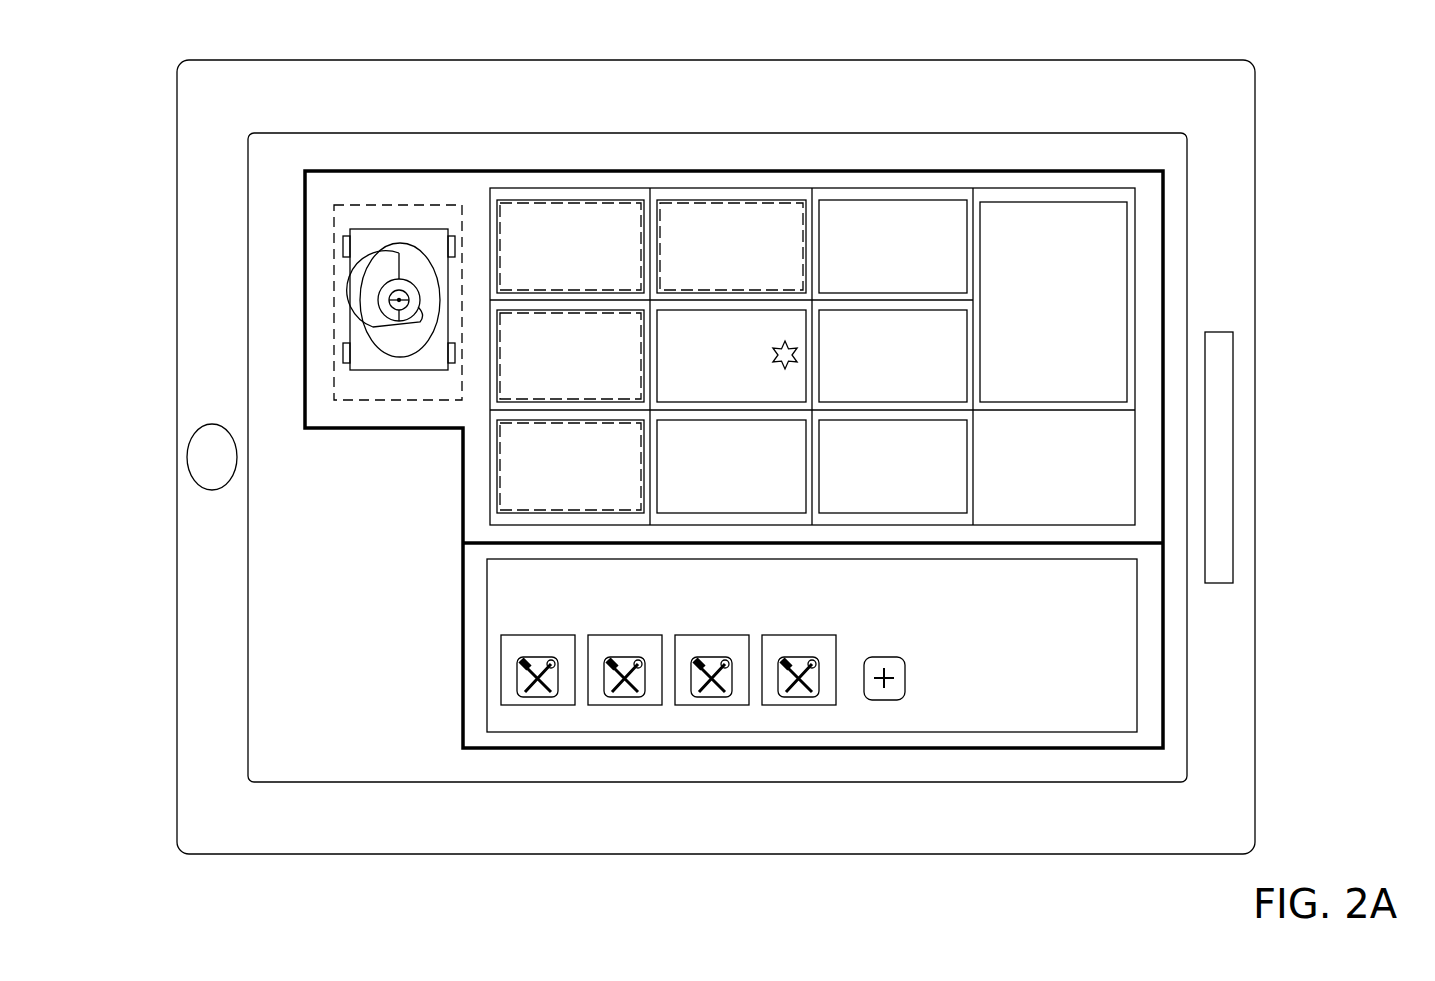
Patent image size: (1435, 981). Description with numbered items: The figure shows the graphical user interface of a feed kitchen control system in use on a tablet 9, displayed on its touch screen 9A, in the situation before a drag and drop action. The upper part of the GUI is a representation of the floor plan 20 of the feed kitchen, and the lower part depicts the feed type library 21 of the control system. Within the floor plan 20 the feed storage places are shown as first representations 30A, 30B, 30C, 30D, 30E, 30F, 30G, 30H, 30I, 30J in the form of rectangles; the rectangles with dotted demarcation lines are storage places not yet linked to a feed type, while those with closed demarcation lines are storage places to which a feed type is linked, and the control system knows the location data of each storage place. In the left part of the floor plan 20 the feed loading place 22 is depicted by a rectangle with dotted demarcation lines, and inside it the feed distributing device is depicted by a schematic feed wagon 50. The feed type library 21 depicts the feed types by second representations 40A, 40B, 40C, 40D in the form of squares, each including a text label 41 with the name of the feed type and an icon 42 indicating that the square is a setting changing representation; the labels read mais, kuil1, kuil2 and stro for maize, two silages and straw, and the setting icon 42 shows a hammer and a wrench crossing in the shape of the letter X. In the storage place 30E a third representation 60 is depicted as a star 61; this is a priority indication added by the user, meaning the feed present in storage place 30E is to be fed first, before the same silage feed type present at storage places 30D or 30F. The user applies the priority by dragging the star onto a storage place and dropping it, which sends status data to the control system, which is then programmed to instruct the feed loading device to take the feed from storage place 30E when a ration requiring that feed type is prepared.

The tablet 9 is at (370, 881).
The touch screen 9A is at (381, 707).
The floor plan 20 is at (393, 170).
The feed type library 21 is at (1037, 748).
The feed loading place 22 is at (368, 205).
The first representation 30A is at (570, 246).
The first representation 30B is at (570, 356).
The first representation 30C is at (570, 466).
The first representation 30D is at (731, 246).
The first representation 30E is at (810, 208).
The first representation 30F is at (731, 466).
The first representation 30G is at (893, 246).
The first representation 30H is at (893, 356).
The first representation 30I is at (893, 466).
The first representation 30J is at (1053, 302).
The second representation 40A is at (507, 702).
The second representation 40B is at (608, 702).
The second representation 40C is at (708, 700).
The second representation 40D is at (818, 700).
The text label 41 is at (508, 648).
The icon 42 is at (519, 668).
The feed wagon 50 is at (382, 275).
The third representation 60 is at (866, 192).
The star 61 is at (785, 355).